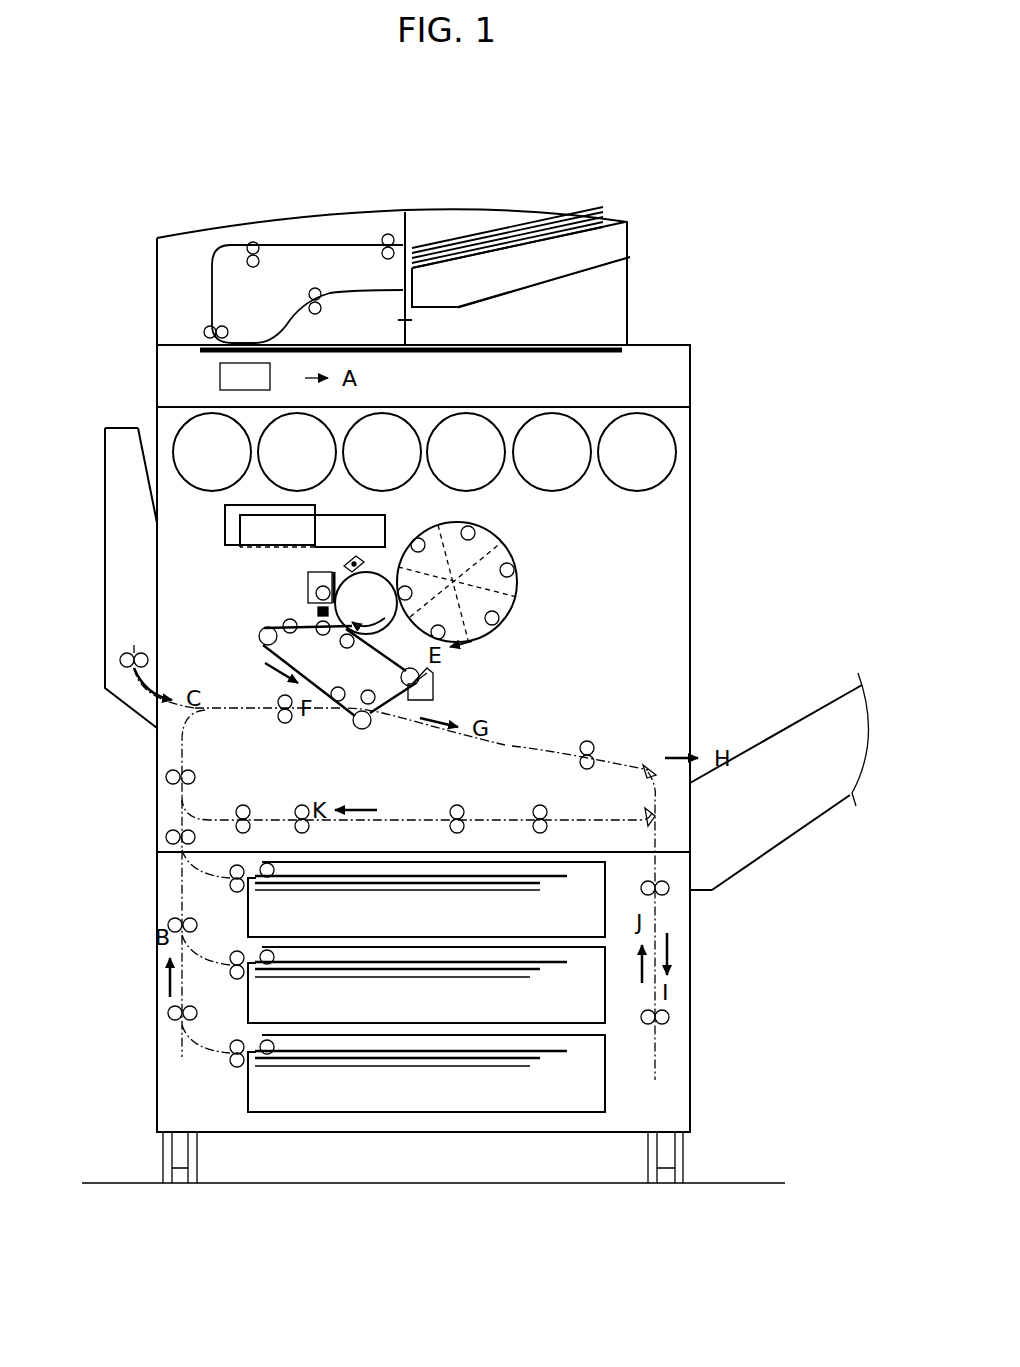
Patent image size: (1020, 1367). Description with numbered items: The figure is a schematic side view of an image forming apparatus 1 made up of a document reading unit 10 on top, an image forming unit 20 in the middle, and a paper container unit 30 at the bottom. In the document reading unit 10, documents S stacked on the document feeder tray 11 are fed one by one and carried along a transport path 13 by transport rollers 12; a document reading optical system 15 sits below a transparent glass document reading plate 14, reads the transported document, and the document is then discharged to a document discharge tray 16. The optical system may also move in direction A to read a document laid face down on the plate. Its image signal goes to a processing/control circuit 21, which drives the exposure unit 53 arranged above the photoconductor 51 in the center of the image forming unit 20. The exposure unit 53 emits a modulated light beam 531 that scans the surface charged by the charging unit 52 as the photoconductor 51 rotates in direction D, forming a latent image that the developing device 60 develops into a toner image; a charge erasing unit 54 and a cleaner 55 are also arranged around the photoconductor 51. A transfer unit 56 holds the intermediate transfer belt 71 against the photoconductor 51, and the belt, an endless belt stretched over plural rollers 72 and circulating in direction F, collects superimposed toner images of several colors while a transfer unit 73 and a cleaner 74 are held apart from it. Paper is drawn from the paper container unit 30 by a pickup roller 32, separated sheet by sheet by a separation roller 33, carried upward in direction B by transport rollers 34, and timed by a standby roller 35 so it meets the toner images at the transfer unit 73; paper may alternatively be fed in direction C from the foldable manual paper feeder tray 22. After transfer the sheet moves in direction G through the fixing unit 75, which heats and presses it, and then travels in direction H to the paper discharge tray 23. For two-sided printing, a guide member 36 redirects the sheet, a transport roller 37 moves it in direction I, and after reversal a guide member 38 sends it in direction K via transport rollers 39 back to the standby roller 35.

The image forming apparatus 1 is at (738, 142).
The document reading unit 10 is at (668, 273).
The document feeder tray 11 is at (515, 247).
The transport rollers 12 is at (258, 242).
The transport path 13 is at (213, 265).
The document reading plate 14 is at (600, 342).
The document reading optical system 15 is at (220, 378).
The document discharge tray 16 is at (540, 262).
The documents S is at (472, 236).
The image forming unit 20 is at (712, 558).
The processing/control circuit 21 is at (225, 517).
The manual paper feeder tray 22 is at (105, 500).
The paper discharge tray 23 is at (815, 713).
The paper container unit 30 is at (725, 993).
The pickup roller 32 is at (268, 862).
The separation roller 33 is at (234, 869).
The transport rollers 34 is at (175, 770).
The standby roller 35 is at (278, 706).
The guide member 36 is at (652, 768).
The transport roller 37 is at (653, 895).
The guide member 38 is at (656, 814).
The transport rollers 39 is at (546, 808).
The photoconductor 51 is at (378, 634).
The charging unit 52 is at (342, 560).
The exposure unit 53 is at (240, 540).
The light beam 531 is at (378, 562).
The charge erasing unit 54 is at (318, 610).
The cleaner 55 is at (308, 592).
The transfer unit 56 is at (338, 690).
The developing device 60 is at (528, 596).
The intermediate transfer belt 71 is at (272, 648).
The rollers 72 is at (320, 622).
The transfer unit 73 is at (365, 728).
The cleaner 74 is at (435, 694).
The fixing unit 75 is at (474, 756).